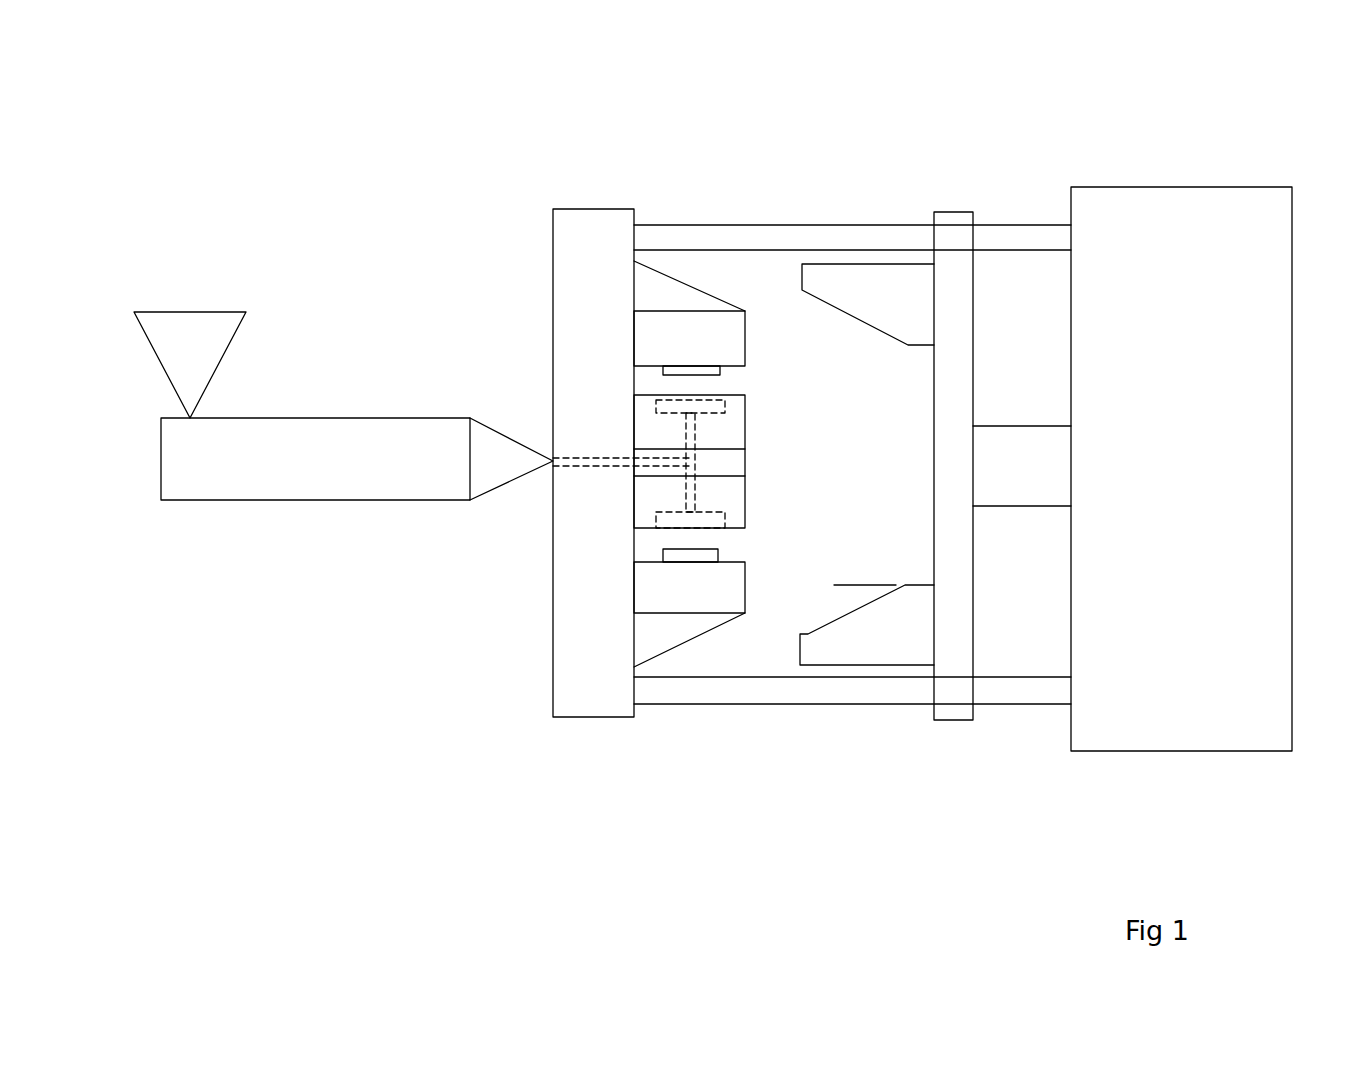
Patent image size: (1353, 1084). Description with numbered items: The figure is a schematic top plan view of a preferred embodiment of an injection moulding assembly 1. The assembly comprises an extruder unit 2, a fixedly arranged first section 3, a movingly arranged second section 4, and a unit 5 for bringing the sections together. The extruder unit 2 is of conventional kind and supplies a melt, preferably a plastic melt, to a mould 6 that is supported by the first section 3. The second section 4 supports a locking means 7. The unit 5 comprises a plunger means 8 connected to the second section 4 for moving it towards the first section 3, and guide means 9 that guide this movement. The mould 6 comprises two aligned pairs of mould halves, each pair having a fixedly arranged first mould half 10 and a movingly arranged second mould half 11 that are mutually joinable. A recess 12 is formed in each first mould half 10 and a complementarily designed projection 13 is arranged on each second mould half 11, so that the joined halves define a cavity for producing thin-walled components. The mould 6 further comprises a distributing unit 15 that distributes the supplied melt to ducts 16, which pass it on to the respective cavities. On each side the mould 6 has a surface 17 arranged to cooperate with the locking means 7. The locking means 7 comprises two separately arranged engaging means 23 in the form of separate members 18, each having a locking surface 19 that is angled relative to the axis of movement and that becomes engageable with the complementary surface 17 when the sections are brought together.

The injection moulding assembly 1 is at (408, 115).
The extruder unit 2 is at (369, 440).
The first section 3 is at (580, 686).
The second section 4 is at (950, 565).
The unit for bringing together the sections 5 is at (1191, 713).
The mould 6 is at (780, 464).
The locking means 7 is at (828, 342).
The plunger means 8 is at (1008, 441).
The guide means 9 is at (740, 236).
The first mould half 10 is at (745, 428).
The second mould half 11 is at (745, 338).
The recess 12 is at (665, 402).
The projection 13 is at (670, 370).
The distributing unit 15 is at (742, 458).
The ducts 16 is at (690, 432).
The surface 17 is at (672, 273).
The members 18 is at (862, 282).
The locking surface 19 is at (870, 338).
The engaging means 23 is at (915, 298).